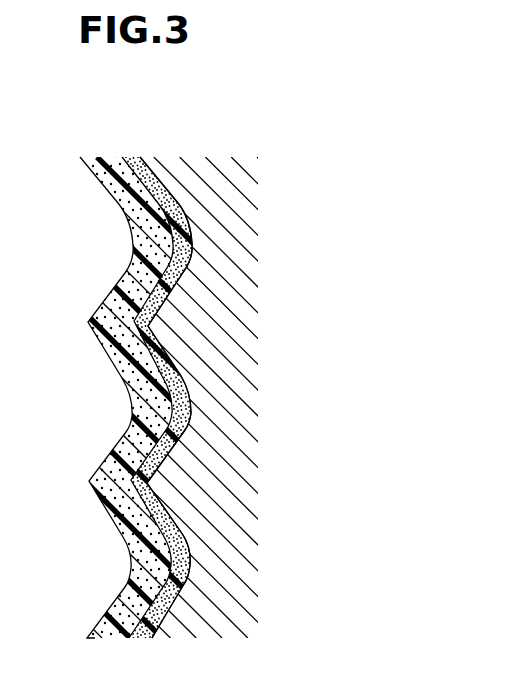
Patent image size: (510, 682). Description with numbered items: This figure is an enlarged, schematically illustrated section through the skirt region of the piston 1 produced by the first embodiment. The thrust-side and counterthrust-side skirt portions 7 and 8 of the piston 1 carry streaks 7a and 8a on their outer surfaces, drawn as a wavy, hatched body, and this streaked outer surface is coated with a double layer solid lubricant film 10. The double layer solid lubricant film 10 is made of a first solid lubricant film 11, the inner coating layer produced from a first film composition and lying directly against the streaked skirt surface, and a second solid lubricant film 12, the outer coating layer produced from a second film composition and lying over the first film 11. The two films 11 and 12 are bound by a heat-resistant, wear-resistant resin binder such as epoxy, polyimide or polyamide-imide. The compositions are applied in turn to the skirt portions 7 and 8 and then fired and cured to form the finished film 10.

The piston 1 is at (145, 412).
The double layer solid lubricant film 10 is at (255, 350).
The first solid lubricant film 11 is at (139, 163).
The second solid lubricant film 12 is at (116, 162).
The thrust-side skirt portion 7 is at (255, 419).
The counterthrust-side skirt portion 8 is at (212, 612).
The streaks 7a is at (264, 397).
The streaks 8a is at (194, 247).